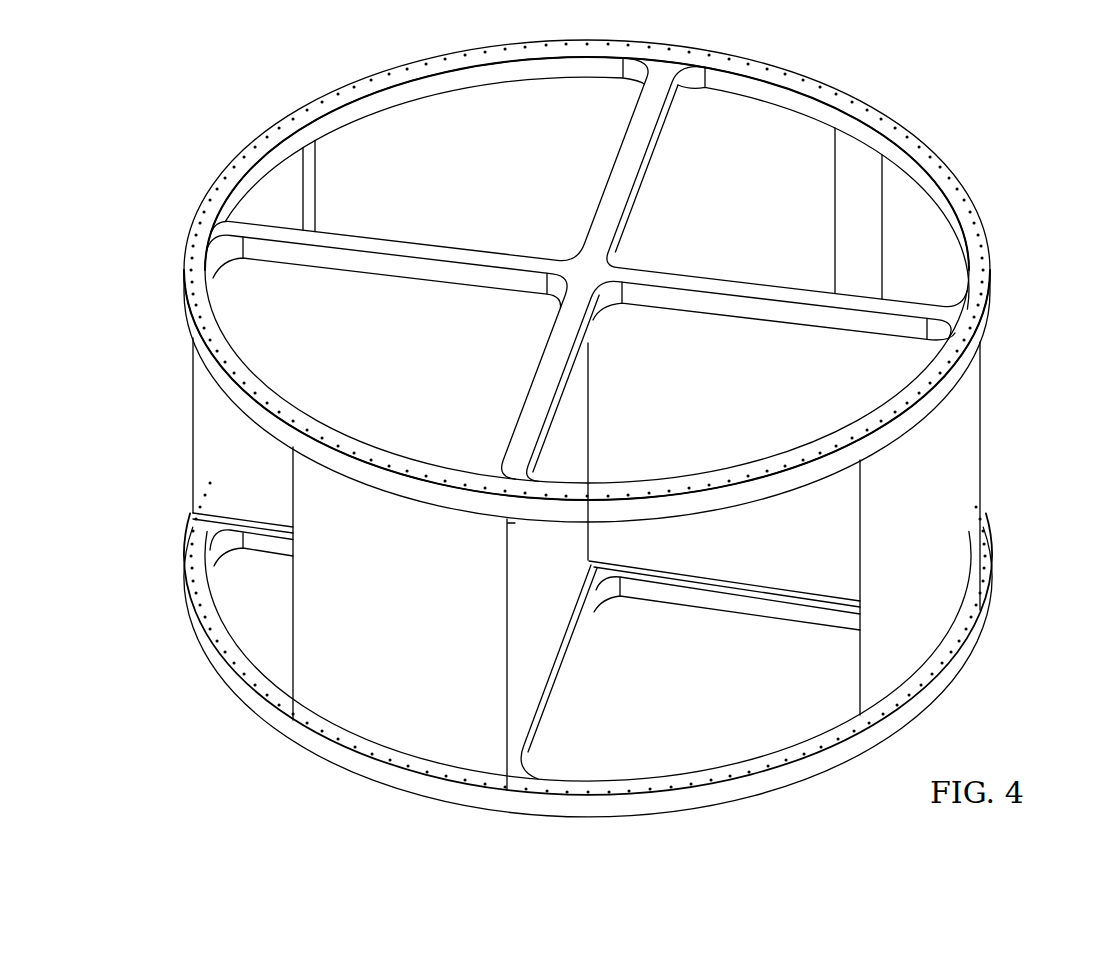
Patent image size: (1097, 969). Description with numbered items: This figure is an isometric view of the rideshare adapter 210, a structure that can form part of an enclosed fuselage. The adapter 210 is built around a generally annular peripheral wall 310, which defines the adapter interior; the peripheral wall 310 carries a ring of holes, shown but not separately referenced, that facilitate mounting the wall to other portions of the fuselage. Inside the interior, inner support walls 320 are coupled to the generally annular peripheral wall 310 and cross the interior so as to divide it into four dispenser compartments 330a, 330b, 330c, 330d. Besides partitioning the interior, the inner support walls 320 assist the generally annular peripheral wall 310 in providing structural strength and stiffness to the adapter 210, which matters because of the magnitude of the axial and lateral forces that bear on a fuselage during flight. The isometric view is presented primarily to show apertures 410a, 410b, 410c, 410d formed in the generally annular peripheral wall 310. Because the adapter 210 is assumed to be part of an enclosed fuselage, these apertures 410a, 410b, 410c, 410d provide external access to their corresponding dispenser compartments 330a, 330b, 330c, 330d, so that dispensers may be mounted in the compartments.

The rideshare adapter 210 is at (968, 72).
The generally annular peripheral wall 310 is at (975, 476).
The inner support walls 320 is at (617, 165).
The dispenser compartment 330a is at (509, 183).
The dispenser compartment 330b is at (779, 221).
The dispenser compartment 330c is at (408, 353).
The dispenser compartment 330d is at (739, 415).
The aperture 410a is at (328, 80).
The aperture 410b is at (990, 176).
The aperture 410c is at (212, 490).
The aperture 410d is at (838, 640).